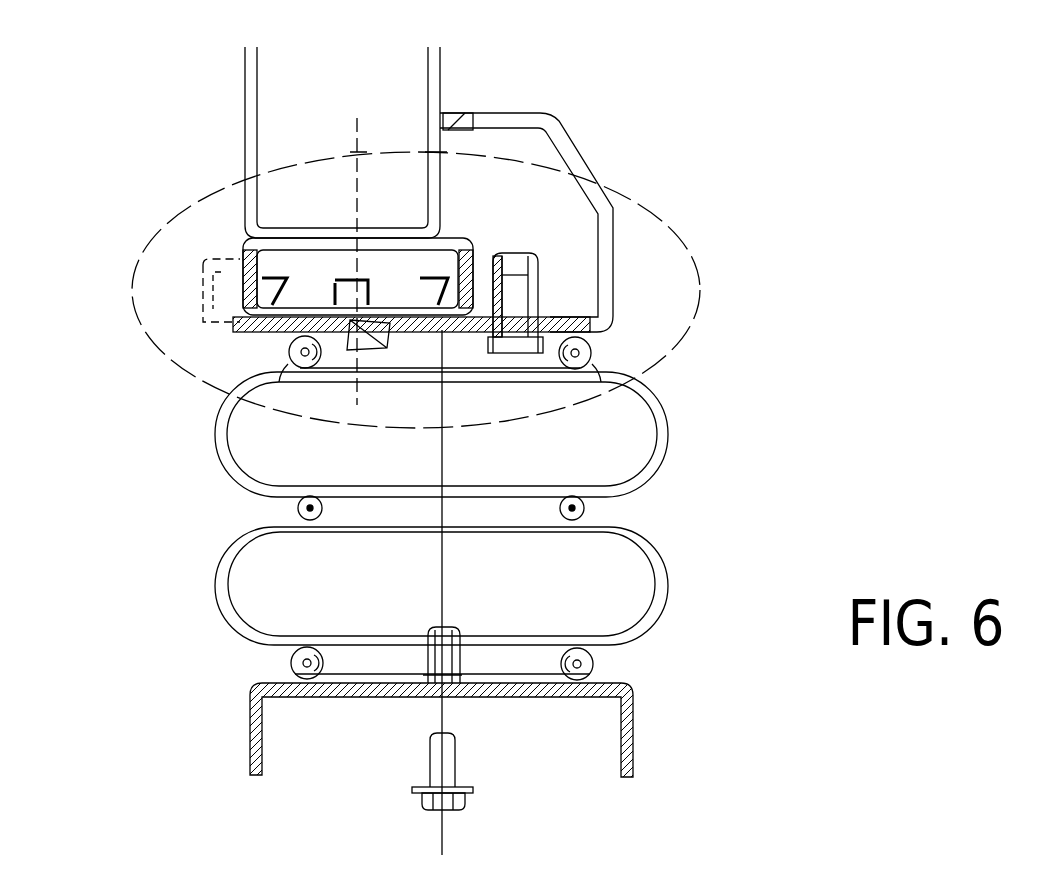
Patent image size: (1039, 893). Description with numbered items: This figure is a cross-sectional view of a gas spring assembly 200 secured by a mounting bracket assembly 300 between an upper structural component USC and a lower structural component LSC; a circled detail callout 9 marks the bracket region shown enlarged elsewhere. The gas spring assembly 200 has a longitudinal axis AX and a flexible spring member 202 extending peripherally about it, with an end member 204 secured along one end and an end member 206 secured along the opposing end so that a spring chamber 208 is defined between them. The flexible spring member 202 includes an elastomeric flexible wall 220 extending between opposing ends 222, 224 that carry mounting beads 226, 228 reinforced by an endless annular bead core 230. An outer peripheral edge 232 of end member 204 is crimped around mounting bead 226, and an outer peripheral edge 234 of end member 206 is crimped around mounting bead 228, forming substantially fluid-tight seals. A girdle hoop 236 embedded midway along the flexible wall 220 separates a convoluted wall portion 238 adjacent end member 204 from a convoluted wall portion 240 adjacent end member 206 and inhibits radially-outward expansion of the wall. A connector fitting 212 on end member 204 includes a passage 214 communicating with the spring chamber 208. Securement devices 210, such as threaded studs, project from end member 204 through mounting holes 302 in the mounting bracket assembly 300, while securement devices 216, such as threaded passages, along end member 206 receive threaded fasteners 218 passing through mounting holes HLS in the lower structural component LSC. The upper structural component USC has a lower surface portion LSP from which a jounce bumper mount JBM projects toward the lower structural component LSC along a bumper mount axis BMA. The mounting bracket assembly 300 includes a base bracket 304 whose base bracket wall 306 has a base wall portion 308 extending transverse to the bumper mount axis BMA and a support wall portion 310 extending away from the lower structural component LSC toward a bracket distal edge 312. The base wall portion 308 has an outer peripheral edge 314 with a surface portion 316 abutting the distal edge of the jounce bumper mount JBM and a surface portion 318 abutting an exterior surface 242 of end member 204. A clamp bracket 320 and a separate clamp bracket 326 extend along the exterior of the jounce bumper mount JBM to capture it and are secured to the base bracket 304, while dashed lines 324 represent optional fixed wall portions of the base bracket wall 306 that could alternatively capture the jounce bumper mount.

The detail view reference circle 9 is at (158, 222).
The upper structural component USC is at (243, 93).
The bumper mount axis BMA is at (357, 132).
The lower surface portion LSP is at (386, 261).
The jounce bumper mount JBM is at (446, 236).
The lower structural component LSC is at (247, 750).
The mounting holes HLS is at (408, 690).
The longitudinal axis AX is at (442, 843).
The gas spring assembly 200 is at (697, 493).
The flexible spring member 202 is at (667, 538).
The end member 204 is at (648, 372).
The end member 206 is at (600, 665).
The spring chamber 208 is at (277, 580).
The securement devices 210 is at (275, 383).
The connector fitting 212 is at (538, 290).
The passage 214 is at (518, 253).
The securement devices 216 is at (462, 640).
The threaded fasteners 218 is at (457, 765).
The flexible wall 220 is at (668, 455).
The end 222 is at (556, 392).
The end 224 is at (553, 620).
The mounting bead 226 is at (528, 390).
The mounting bead 228 is at (576, 672).
The bead core 230 is at (300, 383).
The outer peripheral edge 232 is at (290, 361).
The outer peripheral edge 234 is at (290, 663).
The girdle hoop 236 is at (330, 508).
The convoluted wall portion 238 is at (662, 424).
The convoluted wall portion 240 is at (668, 582).
The exterior surface 242 is at (362, 355).
The mounting bracket assembly 300 is at (623, 131).
The mounting holes 302 is at (400, 315).
The base bracket 304 is at (600, 187).
The base bracket wall 306 is at (232, 337).
The base wall portion 308 is at (303, 310).
The support wall portion 310 is at (578, 147).
The bracket distal edge 312 is at (455, 113).
The outer peripheral edge 314 is at (233, 326).
The surface portion 316 is at (553, 318).
The surface portion 318 is at (606, 362).
The clamp bracket 320 is at (485, 237).
The fixed wall portions 324 is at (200, 305).
The clamp bracket 326 is at (240, 245).